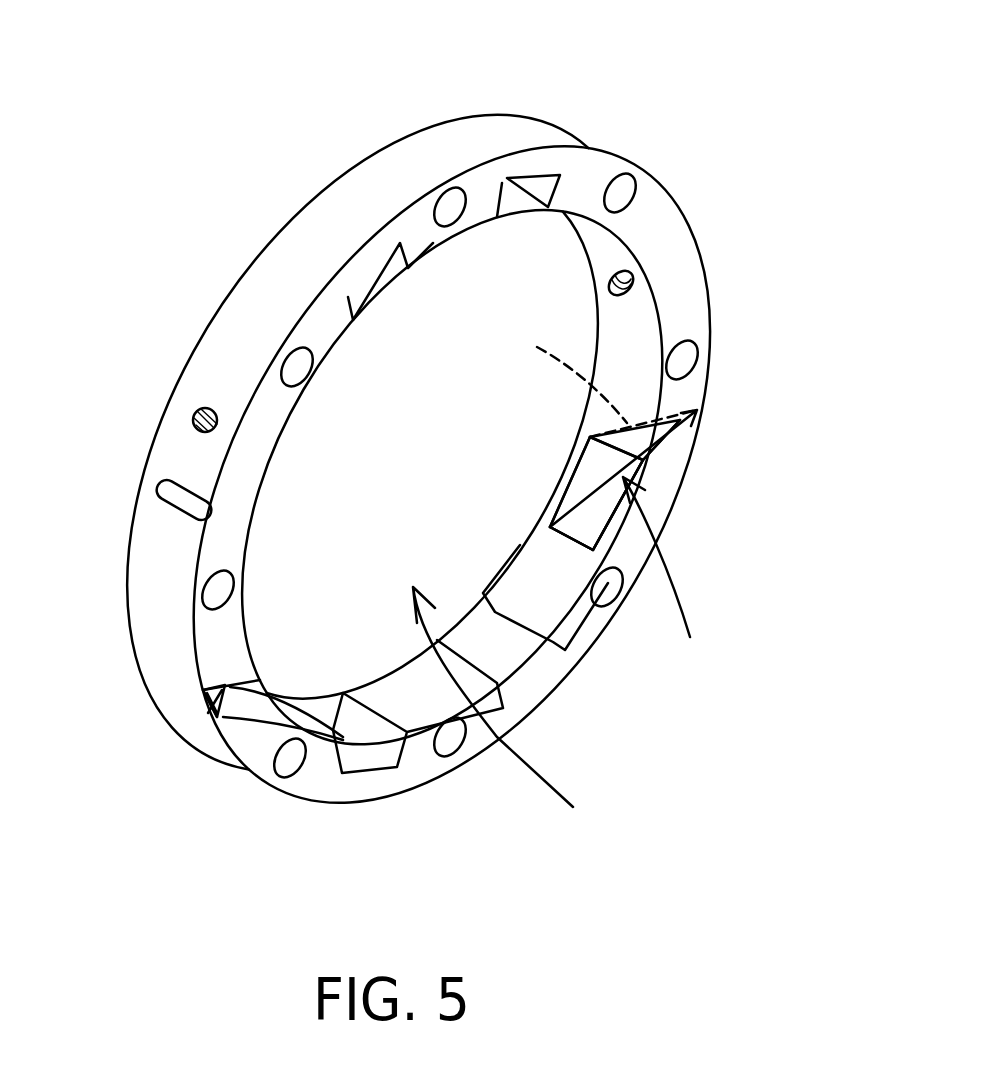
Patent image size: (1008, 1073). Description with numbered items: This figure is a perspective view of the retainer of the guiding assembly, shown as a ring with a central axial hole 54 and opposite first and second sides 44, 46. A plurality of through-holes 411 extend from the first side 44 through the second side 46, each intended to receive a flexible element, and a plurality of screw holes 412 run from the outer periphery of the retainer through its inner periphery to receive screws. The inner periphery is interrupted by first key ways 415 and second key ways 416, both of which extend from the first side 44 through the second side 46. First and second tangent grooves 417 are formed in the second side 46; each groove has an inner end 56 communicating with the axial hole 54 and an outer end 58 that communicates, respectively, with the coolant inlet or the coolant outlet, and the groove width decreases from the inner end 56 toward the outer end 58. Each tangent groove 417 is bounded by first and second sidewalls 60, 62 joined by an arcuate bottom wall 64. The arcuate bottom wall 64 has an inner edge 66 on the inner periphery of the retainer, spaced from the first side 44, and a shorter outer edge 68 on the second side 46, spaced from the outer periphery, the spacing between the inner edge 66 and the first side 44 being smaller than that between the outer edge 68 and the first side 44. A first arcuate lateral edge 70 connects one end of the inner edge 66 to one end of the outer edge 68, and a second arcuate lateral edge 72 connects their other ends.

The first side 44 is at (593, 306).
The second side 46 is at (667, 248).
The through-holes 411 is at (617, 192).
The screw holes 412 is at (197, 417).
The first key ways 415 is at (348, 297).
The second key ways 416 is at (540, 188).
The tangent grooves 417 is at (247, 712).
The axial hole 54 is at (512, 718).
The inner end 56 is at (590, 485).
The outer end 58 is at (697, 437).
The first sidewall 60 is at (697, 395).
The second sidewall 62 is at (643, 490).
The arcuate bottom wall 64 is at (620, 472).
The inner edge 66 is at (583, 460).
The outer edge 68 is at (690, 432).
The first arcuate lateral edge 70 is at (602, 370).
The second arcuate lateral edge 72 is at (670, 577).